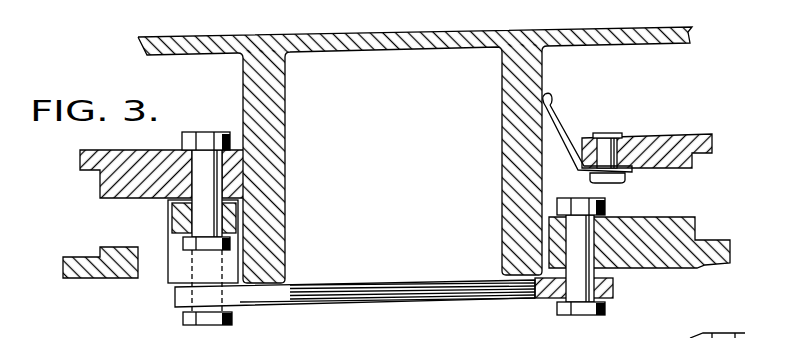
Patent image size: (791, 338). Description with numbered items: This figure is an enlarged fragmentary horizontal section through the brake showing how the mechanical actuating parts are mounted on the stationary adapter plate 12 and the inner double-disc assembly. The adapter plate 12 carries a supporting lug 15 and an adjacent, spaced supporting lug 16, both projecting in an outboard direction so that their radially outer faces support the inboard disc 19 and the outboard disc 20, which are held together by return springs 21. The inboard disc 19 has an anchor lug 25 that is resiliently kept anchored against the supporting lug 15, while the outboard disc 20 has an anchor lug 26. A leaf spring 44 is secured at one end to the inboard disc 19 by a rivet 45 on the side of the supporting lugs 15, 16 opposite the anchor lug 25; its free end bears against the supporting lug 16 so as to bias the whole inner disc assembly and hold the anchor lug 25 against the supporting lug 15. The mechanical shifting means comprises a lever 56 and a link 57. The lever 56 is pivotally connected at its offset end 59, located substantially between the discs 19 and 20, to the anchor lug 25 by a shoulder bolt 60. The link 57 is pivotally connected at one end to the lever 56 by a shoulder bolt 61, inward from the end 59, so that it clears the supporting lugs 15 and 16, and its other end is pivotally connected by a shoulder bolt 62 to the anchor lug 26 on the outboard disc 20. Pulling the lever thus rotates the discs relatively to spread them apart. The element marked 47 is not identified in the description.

The adapter plate 12 is at (469, 30).
The supporting lug 15 is at (275, 218).
The supporting lug 16 is at (504, 187).
The inboard disc 19 is at (678, 145).
The outboard disc 20 is at (705, 265).
The return spring 21 is at (445, 333).
The anchor lug 25 is at (236, 178).
The anchor lug 26 is at (560, 238).
The leaf spring 44 is at (556, 132).
The rivet 45 is at (612, 137).
The fastener 47 is at (666, 329).
The lever 56 is at (174, 280).
The link 57 is at (384, 296).
The offset end of lever 59 is at (176, 222).
The shoulder bolt 60 is at (205, 131).
The shoulder bolt 61 is at (186, 323).
The shoulder bolt 62 is at (580, 316).